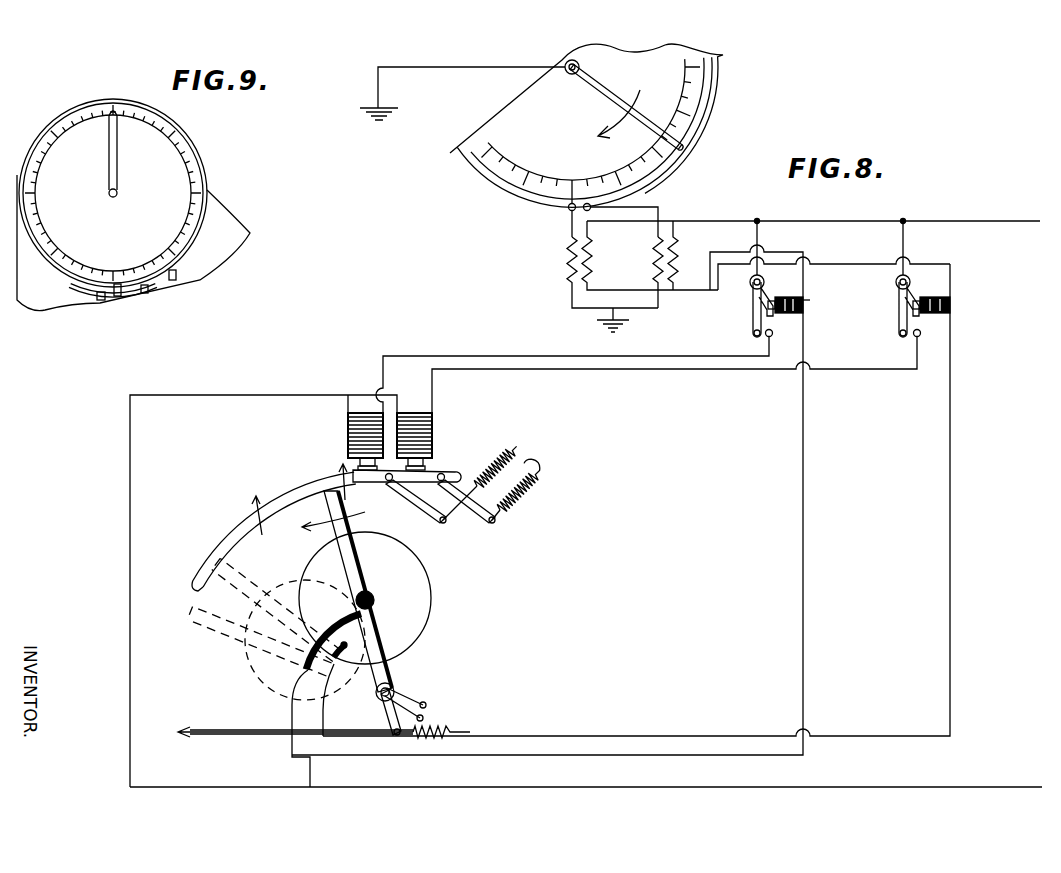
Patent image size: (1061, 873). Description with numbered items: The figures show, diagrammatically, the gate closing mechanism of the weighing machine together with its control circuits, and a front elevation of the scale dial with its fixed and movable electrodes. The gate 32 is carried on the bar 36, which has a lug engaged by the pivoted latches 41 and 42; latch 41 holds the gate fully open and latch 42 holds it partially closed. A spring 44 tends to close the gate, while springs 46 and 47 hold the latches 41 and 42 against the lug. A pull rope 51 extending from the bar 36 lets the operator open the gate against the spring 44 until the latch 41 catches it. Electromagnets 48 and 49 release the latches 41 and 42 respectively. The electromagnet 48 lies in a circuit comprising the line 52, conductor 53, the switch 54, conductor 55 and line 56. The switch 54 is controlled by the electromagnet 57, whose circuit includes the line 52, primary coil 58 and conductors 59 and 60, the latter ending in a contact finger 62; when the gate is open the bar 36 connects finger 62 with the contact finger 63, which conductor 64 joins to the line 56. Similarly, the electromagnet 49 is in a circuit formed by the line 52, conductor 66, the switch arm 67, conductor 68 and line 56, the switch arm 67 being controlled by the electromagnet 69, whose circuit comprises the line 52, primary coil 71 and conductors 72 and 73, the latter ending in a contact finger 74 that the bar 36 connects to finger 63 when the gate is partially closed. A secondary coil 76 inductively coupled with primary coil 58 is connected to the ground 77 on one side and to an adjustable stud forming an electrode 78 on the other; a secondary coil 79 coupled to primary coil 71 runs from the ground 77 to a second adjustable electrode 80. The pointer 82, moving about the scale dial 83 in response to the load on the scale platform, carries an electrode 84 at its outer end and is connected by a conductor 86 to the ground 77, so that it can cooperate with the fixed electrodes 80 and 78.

In FIG. 8, the gate 32 is at (410, 602).
In FIG. 8, the bar 36 is at (345, 527).
In FIG. 8, the latch 41 is at (305, 490).
In FIG. 8, the latch 42 is at (200, 577).
In FIG. 8, the spring 44 is at (445, 730).
In FIG. 8, the spring 46 is at (492, 463).
In FIG. 8, the spring 47 is at (530, 470).
In FIG. 8, the electromagnet 48 is at (348, 438).
In FIG. 8, the electromagnet 49 is at (433, 437).
In FIG. 8, the pull rope 51 is at (218, 732).
In FIG. 8, the line 52 is at (822, 214).
In FIG. 8, the conductor 53 is at (760, 238).
In FIG. 8, the switch 54 is at (752, 329).
In FIG. 8, the conductor 55 is at (715, 356).
In FIG. 8, the line 56 is at (468, 787).
In FIG. 8, the electromagnet 57 is at (786, 297).
In FIG. 8, the primary coil 58 is at (679, 246).
In FIG. 8, the conductor 59 is at (806, 285).
In FIG. 8, the conductor 60 is at (803, 463).
In FIG. 8, the contact finger 62 is at (372, 600).
In FIG. 8, the contact finger 63 is at (380, 612).
In FIG. 8, the conductor 64 is at (305, 776).
In FIG. 8, the conductor 66 is at (907, 238).
In FIG. 8, the switch arm 67 is at (900, 325).
In FIG. 8, the conductor 68 is at (715, 370).
In FIG. 8, the electromagnet 69 is at (928, 297).
In FIG. 8, the primary coil 71 is at (593, 250).
In FIG. 8, the conductor 72 is at (856, 264).
In FIG. 8, the conductor 73 is at (951, 459).
In FIG. 8, the contact finger 74 is at (340, 648).
In FIG. 8, the secondary coil 76 is at (655, 270).
In FIG. 8, the ground 77 is at (390, 109).
In FIG. 9, the electrode 78 is at (172, 279).
In FIG. 8, the electrode 78 is at (591, 207).
In FIG. 8, the secondary coil 79 is at (566, 250).
In FIG. 9, the electrode 80 is at (117, 294).
In FIG. 8, the electrode 80 is at (569, 209).
In FIG. 9, the pointer 82 is at (118, 157).
In FIG. 8, the pointer 82 is at (612, 112).
In FIG. 9, the scale dial 83 is at (124, 242).
In FIG. 8, the scale dial 83 is at (582, 135).
In FIG. 9, the electrode 84 is at (117, 110).
In FIG. 8, the electrode 84 is at (683, 148).
In FIG. 8, the conductor 86 is at (487, 62).